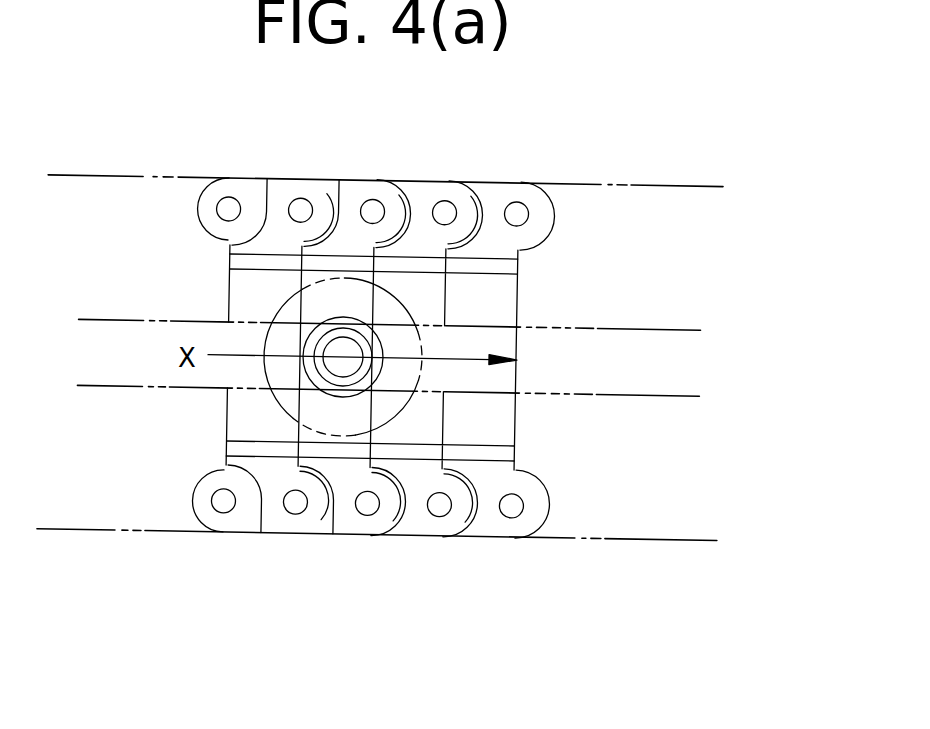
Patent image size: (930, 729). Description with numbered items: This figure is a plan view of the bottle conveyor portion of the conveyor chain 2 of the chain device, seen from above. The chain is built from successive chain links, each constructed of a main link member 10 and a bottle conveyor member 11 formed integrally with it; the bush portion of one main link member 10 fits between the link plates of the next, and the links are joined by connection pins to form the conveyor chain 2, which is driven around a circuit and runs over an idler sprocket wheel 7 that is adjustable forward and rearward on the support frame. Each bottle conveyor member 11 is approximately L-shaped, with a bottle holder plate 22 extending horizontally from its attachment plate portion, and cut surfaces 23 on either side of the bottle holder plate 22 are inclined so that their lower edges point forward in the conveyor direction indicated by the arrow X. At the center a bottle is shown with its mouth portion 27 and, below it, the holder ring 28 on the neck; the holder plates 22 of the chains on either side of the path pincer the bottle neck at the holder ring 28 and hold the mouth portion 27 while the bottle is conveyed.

The conveyor chain 2 is at (527, 330).
The idler sprocket wheel 7 is at (354, 538).
The main link member 10 is at (278, 535).
The bottle conveyor member 11 is at (227, 418).
The bottle holder plate 22 is at (487, 403).
The cut surfaces 23 is at (520, 413).
The mouth portion 27 is at (348, 336).
The holder ring 28 is at (385, 350).